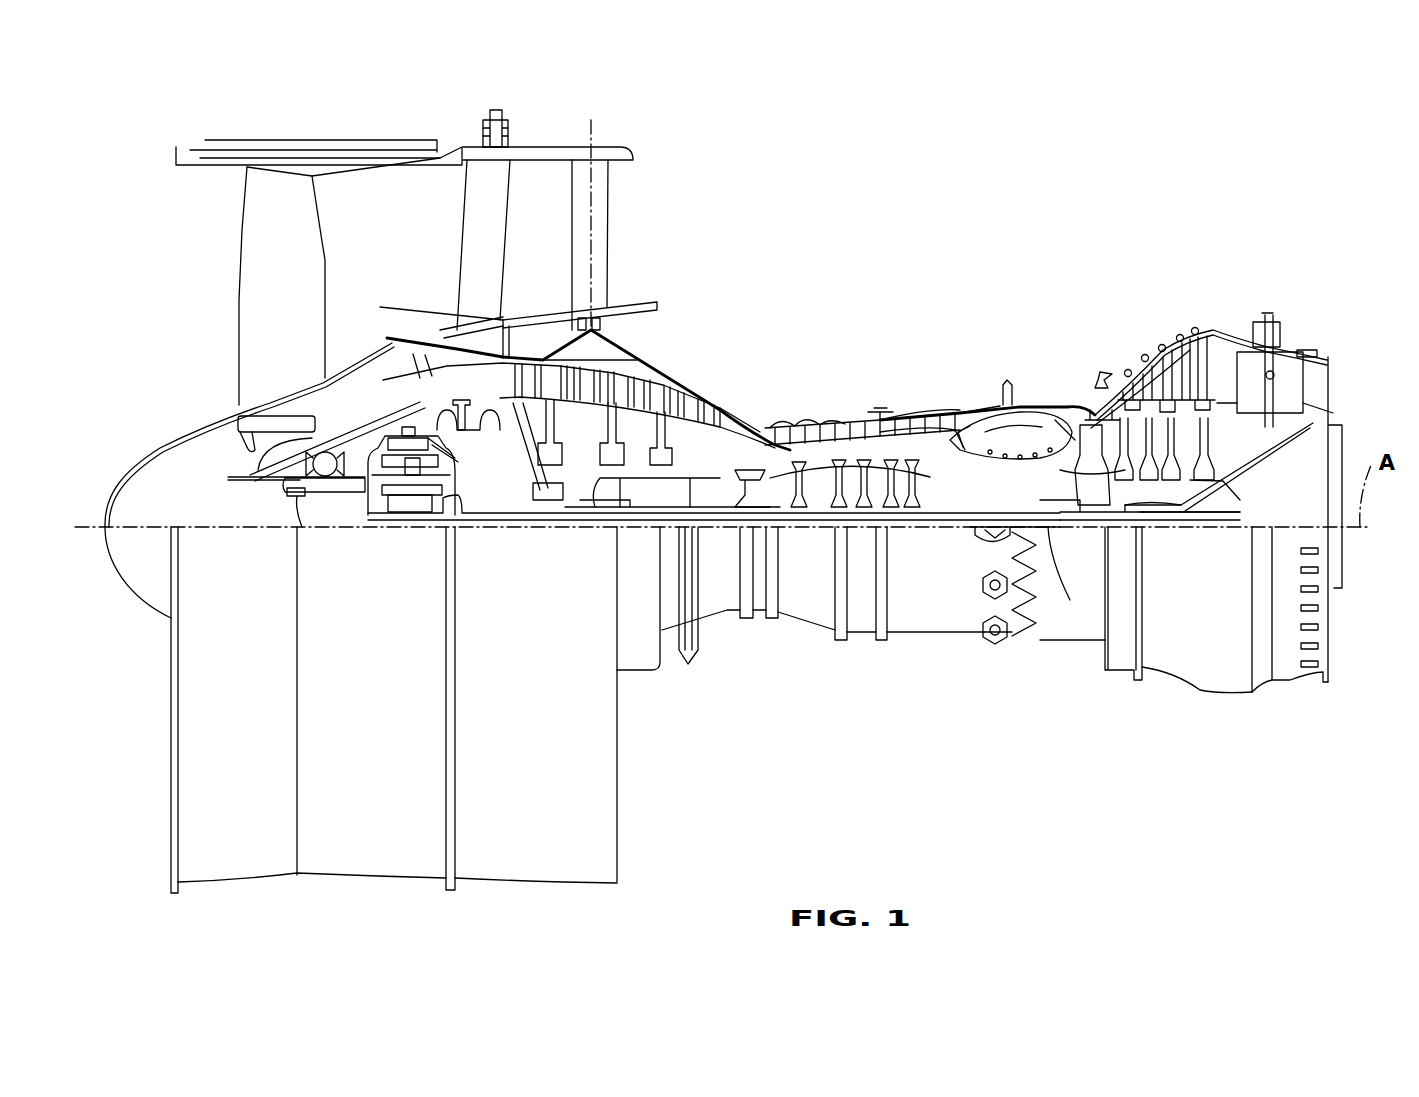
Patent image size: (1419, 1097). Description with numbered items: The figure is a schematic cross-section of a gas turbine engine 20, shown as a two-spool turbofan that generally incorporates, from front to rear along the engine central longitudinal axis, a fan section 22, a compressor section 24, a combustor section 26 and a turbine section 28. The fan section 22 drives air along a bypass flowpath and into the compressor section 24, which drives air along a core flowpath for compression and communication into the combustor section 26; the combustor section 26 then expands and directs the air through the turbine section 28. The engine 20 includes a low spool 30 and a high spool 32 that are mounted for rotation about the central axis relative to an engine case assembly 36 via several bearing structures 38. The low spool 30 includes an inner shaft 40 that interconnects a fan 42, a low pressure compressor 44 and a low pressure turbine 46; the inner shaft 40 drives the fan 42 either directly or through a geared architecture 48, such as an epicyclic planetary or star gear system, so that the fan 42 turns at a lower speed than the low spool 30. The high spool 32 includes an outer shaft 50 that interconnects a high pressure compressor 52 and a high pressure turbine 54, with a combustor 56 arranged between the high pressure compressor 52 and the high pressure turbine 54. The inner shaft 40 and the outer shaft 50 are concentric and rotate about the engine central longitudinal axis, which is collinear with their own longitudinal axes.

The gas turbine engine 20 is at (1072, 211).
The fan section 22 is at (170, 120).
The compressor section 24 is at (463, 273).
The combustor section 26 is at (1018, 273).
The turbine section 28 is at (1270, 273).
The low spool 30 is at (700, 487).
The high spool 32 is at (933, 485).
The engine case assembly 36 is at (861, 636).
The bearing structures 38 is at (212, 600).
The inner shaft 40 is at (1053, 512).
The fan 42 is at (268, 315).
The low pressure compressor 44 is at (652, 378).
The low pressure turbine 46 is at (1182, 369).
The geared architecture 48 is at (410, 483).
The outer shaft 50 is at (1065, 500).
The high pressure compressor 52 is at (787, 450).
The high pressure turbine 54 is at (1087, 437).
The combustor 56 is at (1017, 437).